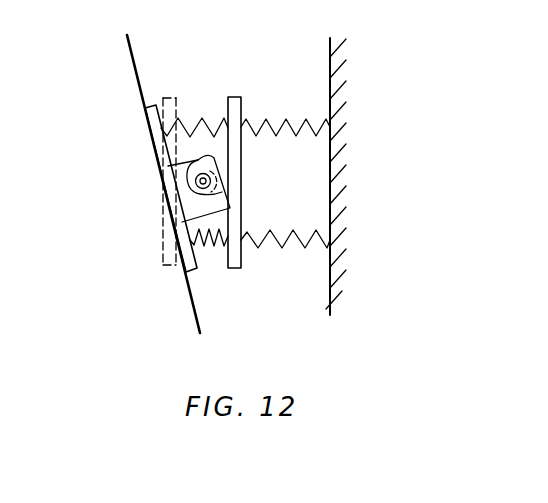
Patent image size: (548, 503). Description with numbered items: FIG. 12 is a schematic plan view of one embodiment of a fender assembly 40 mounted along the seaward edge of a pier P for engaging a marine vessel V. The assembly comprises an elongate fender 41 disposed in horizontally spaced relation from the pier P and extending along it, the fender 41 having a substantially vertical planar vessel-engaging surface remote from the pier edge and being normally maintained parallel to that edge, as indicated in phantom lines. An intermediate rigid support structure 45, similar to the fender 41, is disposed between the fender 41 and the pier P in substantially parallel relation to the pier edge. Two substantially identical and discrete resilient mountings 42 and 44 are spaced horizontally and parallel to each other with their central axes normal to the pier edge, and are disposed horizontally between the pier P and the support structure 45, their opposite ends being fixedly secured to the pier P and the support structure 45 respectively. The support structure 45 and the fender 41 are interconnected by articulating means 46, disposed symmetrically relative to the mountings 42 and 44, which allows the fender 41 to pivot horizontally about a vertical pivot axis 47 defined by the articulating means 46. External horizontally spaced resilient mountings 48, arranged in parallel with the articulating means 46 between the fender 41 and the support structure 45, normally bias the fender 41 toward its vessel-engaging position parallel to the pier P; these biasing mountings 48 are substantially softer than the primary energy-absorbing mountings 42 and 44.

The valve V is at (128, 56).
The pier P is at (334, 143).
The fender assembly 40 is at (244, 100).
The elongate fender 41 is at (160, 134).
The resilient mounting 42 is at (290, 122).
The resilient mounting 44 is at (288, 250).
The intermediate rigid support structure 45 is at (225, 103).
The articulating means 46 is at (205, 157).
The vertical pivot axis 47 is at (213, 170).
The resilient biasing mountings 48 is at (200, 120).